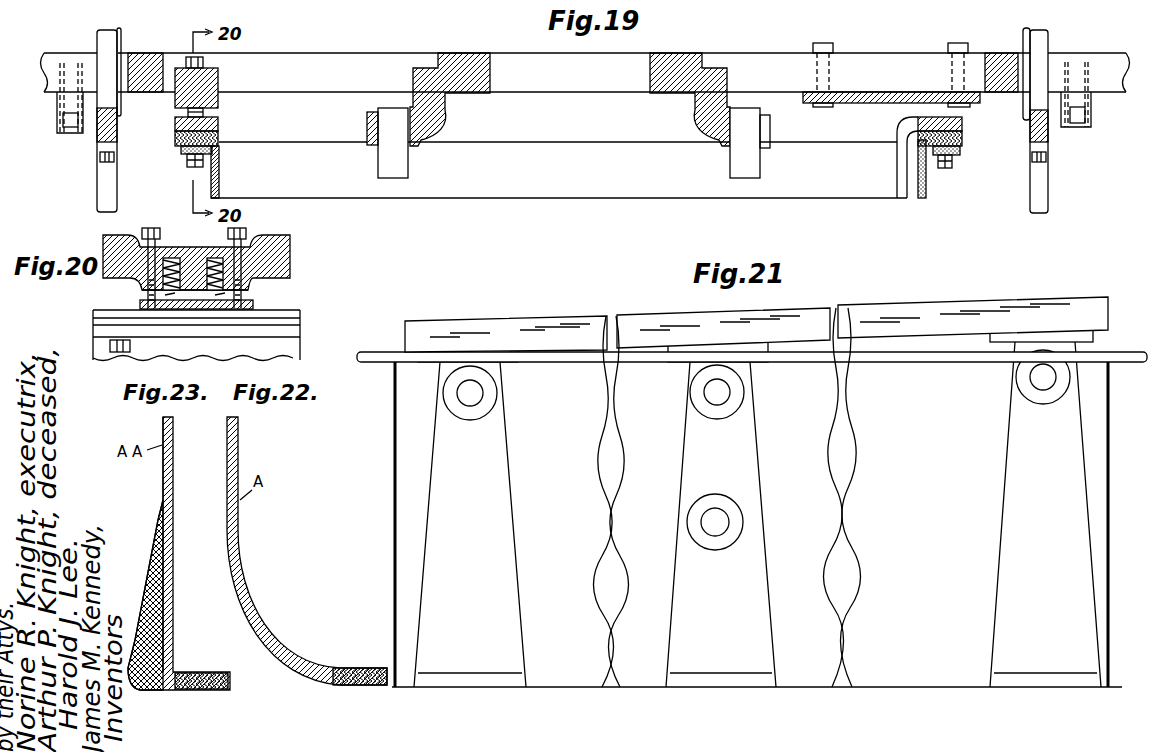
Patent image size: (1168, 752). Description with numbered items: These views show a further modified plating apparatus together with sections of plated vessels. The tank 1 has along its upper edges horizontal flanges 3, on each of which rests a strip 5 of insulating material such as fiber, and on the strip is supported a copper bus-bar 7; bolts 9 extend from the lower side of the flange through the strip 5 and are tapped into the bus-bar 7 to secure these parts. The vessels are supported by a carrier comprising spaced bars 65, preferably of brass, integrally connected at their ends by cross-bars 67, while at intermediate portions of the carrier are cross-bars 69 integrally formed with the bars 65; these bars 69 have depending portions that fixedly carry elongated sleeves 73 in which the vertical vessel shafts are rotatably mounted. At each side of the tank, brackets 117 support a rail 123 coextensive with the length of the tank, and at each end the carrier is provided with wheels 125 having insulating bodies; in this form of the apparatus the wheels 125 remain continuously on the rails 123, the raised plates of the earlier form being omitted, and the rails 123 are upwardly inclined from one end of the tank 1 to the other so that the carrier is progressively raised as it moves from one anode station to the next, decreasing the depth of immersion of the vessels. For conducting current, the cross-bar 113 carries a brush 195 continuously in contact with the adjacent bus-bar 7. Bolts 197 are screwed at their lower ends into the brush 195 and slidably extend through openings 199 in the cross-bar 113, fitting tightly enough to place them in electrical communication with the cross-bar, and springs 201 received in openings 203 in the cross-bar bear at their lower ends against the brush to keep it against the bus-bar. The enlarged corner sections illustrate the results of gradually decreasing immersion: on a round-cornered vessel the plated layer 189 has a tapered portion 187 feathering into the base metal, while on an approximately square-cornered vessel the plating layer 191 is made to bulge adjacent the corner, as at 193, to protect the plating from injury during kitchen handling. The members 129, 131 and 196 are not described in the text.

In FIG. 19, the tank 1 is at (212, 182).
In FIG. 20, the tank 1 is at (300, 347).
In FIG. 21, the tank 1 is at (405, 433).
In FIG. 19, the horizontal flange 3 is at (180, 150).
In FIG. 20, the horizontal flange 3 is at (96, 334).
In FIG. 21, the horizontal flange 3 is at (365, 355).
In FIG. 19, the insulating strip 5 is at (174, 137).
In FIG. 20, the insulating strip 5 is at (302, 324).
In FIG. 19, the bus-bar 7 is at (220, 128).
In FIG. 20, the bus-bar 7 is at (302, 314).
In FIG. 19, the bolt 9 is at (192, 168).
In FIG. 19, the spaced bar 65 is at (340, 62).
In FIG. 19, the cross-bar 67 is at (148, 58).
In FIG. 19, the intermediate cross-bar 69 is at (468, 86).
In FIG. 19, the elongated sleeve 73 is at (378, 160).
In FIG. 19, the cross-bar 113 is at (208, 78).
In FIG. 20, the cross-bar 113 is at (180, 238).
In FIG. 19, the bracket 117 is at (106, 182).
In FIG. 21, the bracket 117 is at (490, 470).
In FIG. 19, the rail 123 is at (110, 128).
In FIG. 21, the rail 123 is at (561, 320).
In FIG. 19, the wheel 125 is at (107, 33).
In FIG. 19, the end bracket 129 is at (62, 47).
In FIG. 19, the end bracket 131 is at (1088, 117).
In FIG. 23, the tapered portion 187 is at (160, 487).
In FIG. 22, the tapered portion 187 is at (228, 510).
In FIG. 22, the plated layer 189 is at (301, 672).
In FIG. 23, the plating layer 191 is at (152, 600).
In FIG. 23, the bulge 193 is at (134, 686).
In FIG. 19, the brush 195 is at (214, 114).
In FIG. 20, the base plate 196 is at (255, 306).
In FIG. 20, the bolt 197 is at (290, 268).
In FIG. 20, the opening 199 is at (292, 250).
In FIG. 20, the spring 201 is at (163, 283).
In FIG. 20, the opening 203 is at (185, 264).